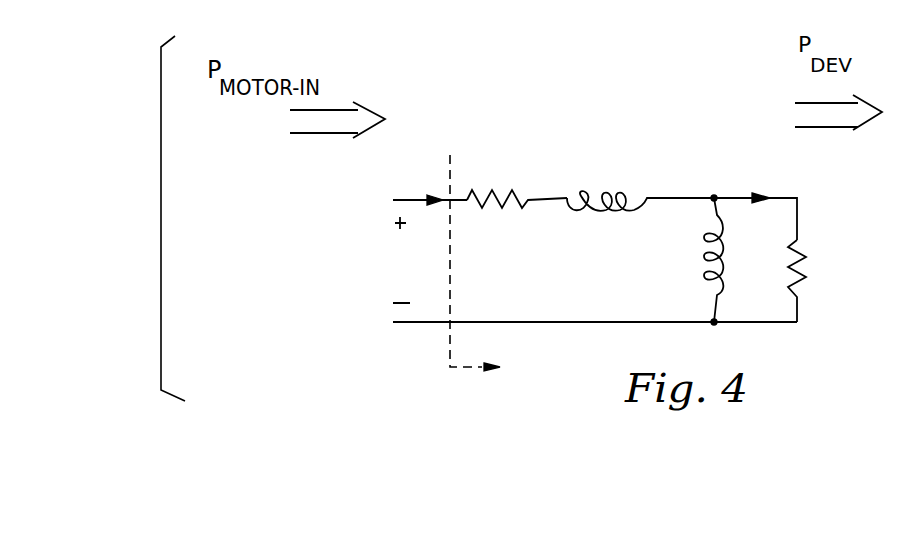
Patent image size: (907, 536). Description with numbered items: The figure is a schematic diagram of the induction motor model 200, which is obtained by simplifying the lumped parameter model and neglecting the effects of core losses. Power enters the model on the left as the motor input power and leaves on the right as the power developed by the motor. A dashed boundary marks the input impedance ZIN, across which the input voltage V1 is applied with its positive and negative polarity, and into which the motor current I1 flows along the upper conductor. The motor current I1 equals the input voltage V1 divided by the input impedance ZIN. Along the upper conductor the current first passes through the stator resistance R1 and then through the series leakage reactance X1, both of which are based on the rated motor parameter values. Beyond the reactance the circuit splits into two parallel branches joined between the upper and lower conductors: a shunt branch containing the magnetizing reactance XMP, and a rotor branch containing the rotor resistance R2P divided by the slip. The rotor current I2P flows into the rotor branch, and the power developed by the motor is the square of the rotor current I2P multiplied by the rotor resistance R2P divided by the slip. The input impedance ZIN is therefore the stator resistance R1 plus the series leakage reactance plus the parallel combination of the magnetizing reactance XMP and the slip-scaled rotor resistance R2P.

The induction motor model 200 is at (714, 102).
The motor current I1 is at (413, 178).
The input voltage V1 is at (407, 290).
The input impedance ZIN is at (481, 288).
The stator resistance R1 is at (503, 161).
The stator leakage reactance X1 is at (619, 176).
The rotor current I2P is at (762, 169).
The rotor resistance R2P is at (873, 280).
The magnetizing reactance XMP is at (683, 260).